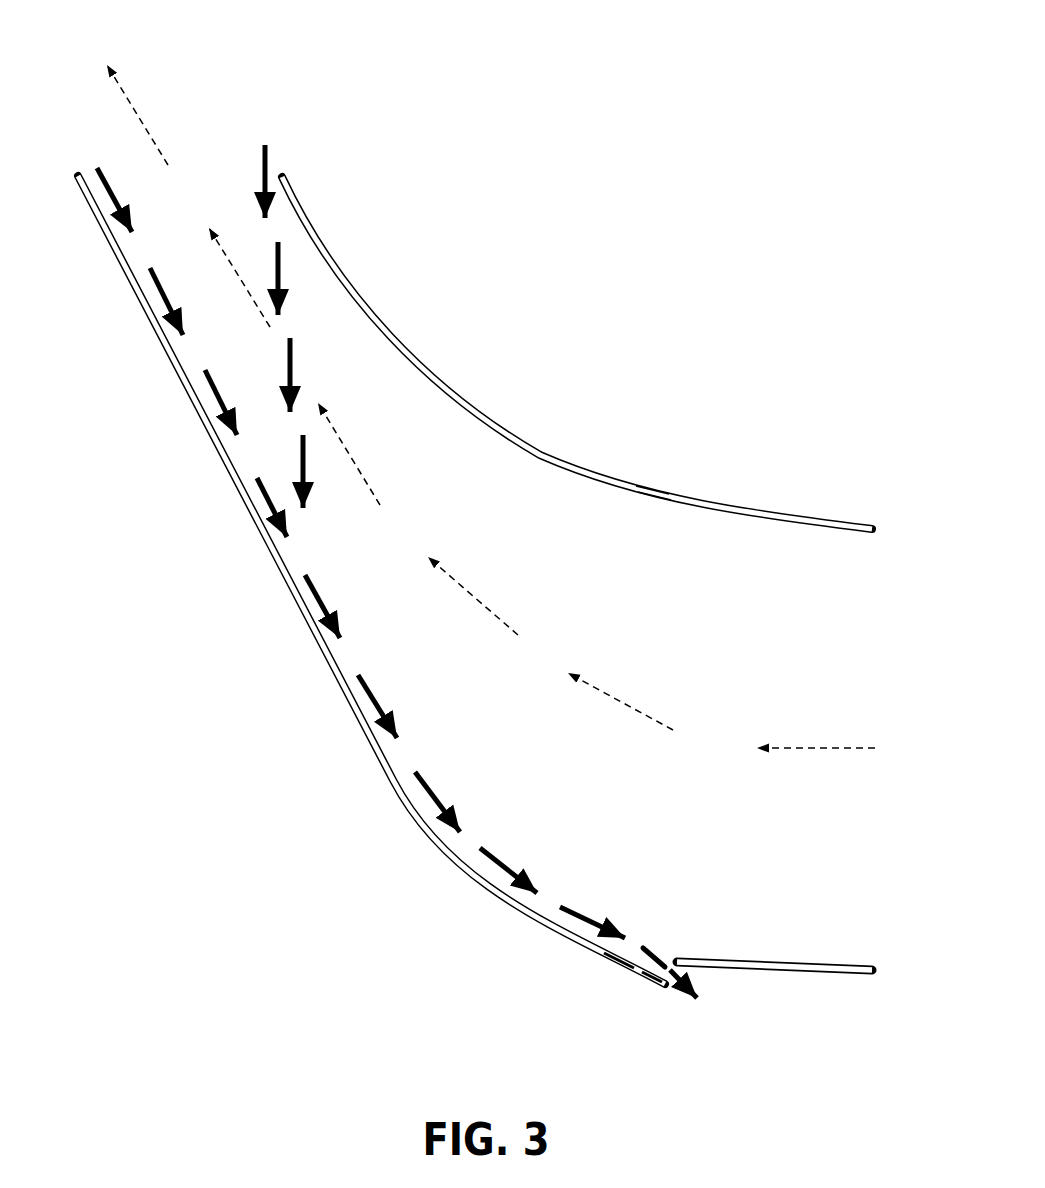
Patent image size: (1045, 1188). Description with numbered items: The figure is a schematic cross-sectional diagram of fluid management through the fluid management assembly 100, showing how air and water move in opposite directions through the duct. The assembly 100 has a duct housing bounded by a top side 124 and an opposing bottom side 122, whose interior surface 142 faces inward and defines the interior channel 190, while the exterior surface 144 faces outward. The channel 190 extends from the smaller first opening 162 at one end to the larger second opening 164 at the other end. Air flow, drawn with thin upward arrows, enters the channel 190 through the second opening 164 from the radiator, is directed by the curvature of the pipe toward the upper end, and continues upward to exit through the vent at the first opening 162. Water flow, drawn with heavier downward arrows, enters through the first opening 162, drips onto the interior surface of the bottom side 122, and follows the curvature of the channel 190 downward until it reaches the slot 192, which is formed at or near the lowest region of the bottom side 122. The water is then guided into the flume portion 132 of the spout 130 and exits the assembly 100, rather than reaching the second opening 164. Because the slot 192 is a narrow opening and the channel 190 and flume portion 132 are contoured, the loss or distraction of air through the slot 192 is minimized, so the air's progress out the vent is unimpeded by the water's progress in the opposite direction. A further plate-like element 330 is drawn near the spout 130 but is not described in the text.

The fluid management assembly 100 is at (663, 100).
The bottom side 122 is at (268, 578).
The top side 124 is at (500, 413).
The spout 130 is at (637, 993).
The flume portion 132 is at (653, 986).
The interior surface 142 is at (661, 484).
The exterior surface 144 is at (658, 508).
The first opening 162 is at (205, 160).
The second opening 164 is at (852, 582).
The interior channel 190 is at (718, 646).
The slot 192 is at (657, 940).
The deflector plate 330 is at (709, 980).